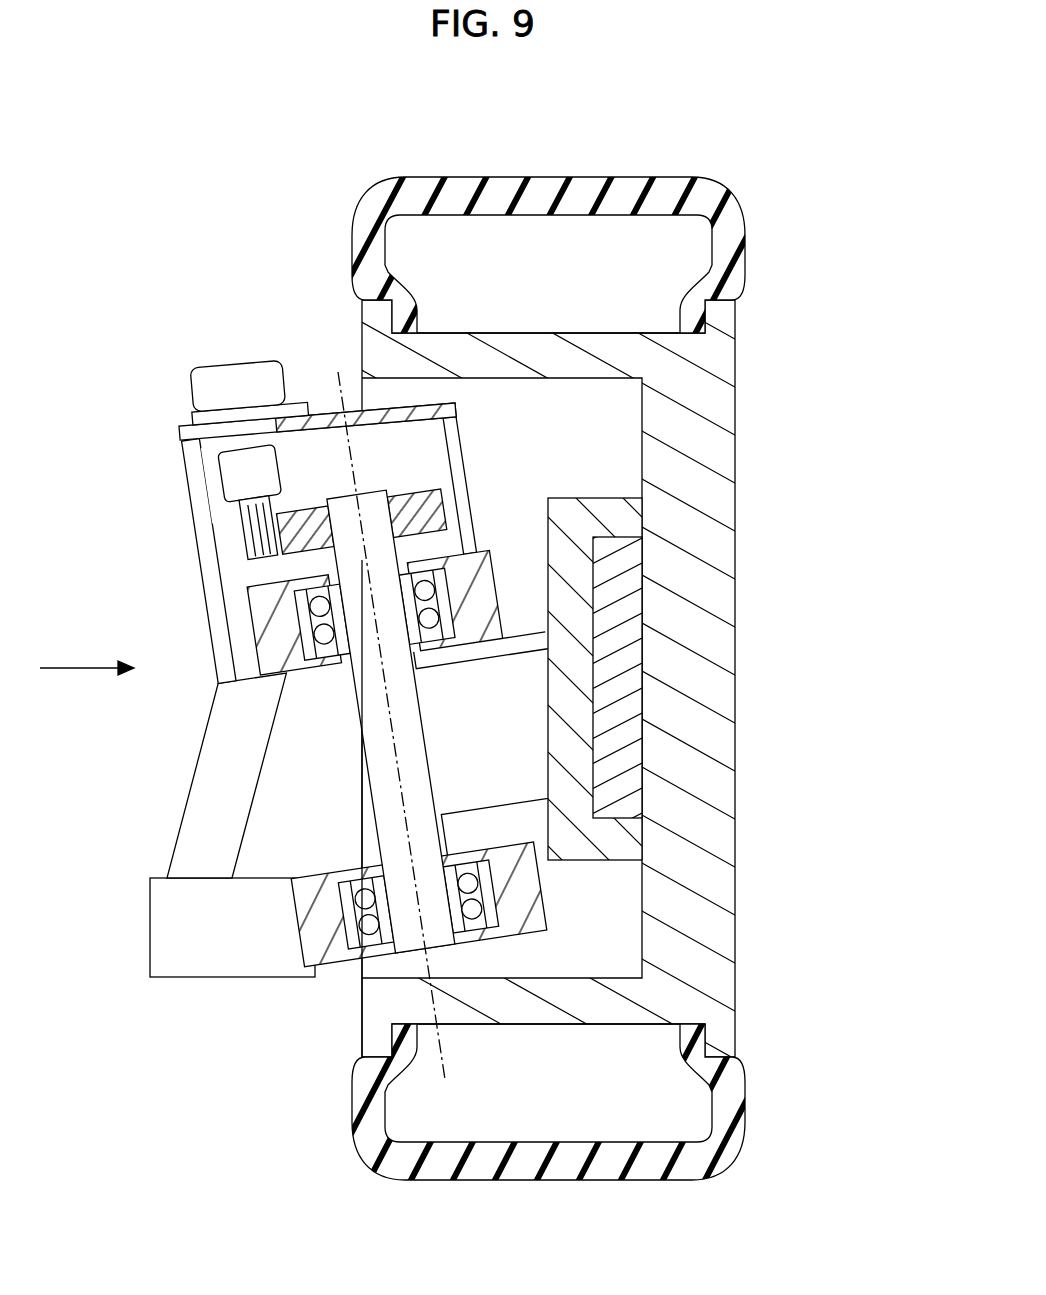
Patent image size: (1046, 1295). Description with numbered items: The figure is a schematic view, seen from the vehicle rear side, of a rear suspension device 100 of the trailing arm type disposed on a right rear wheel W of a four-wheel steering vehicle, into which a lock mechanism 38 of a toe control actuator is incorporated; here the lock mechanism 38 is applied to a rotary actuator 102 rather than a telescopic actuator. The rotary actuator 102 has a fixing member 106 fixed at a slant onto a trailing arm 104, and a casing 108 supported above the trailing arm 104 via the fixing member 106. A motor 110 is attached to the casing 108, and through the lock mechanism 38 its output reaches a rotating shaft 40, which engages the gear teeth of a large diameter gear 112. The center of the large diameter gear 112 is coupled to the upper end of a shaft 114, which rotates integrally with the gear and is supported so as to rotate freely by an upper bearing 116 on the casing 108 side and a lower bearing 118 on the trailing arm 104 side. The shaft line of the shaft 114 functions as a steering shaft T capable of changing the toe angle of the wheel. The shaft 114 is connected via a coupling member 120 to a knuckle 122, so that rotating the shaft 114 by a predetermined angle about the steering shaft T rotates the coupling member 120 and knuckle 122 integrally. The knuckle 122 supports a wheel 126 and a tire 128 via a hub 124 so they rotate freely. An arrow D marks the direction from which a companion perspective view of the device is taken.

The rear suspension device 100 is at (539, 627).
The rotary actuator 102 is at (327, 682).
The trailing arm 104 is at (232, 980).
The fixing member 106 is at (197, 766).
The casing 108 is at (460, 432).
The motor 110 is at (233, 368).
The large diameter gear 112 is at (440, 508).
The shaft 114 is at (392, 806).
The upper bearing 116 is at (480, 588).
The lower bearing 118 is at (500, 912).
The coupling member 120 is at (517, 803).
The knuckle 122 is at (605, 855).
The hub 124 is at (627, 694).
The wheel 126 is at (710, 543).
The tire 128 is at (726, 228).
The lock mechanism 38 is at (212, 478).
The rotating shaft 40 is at (237, 505).
The rear wheel W is at (548, 149).
The steering shaft T is at (446, 1056).
The arrow D is at (87, 659).